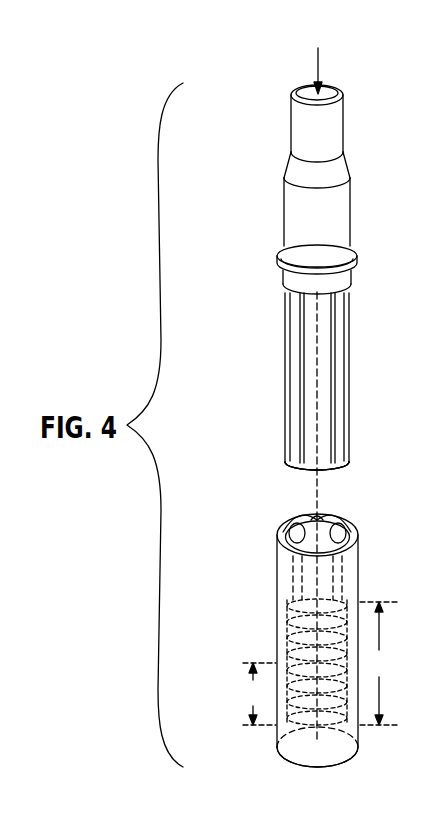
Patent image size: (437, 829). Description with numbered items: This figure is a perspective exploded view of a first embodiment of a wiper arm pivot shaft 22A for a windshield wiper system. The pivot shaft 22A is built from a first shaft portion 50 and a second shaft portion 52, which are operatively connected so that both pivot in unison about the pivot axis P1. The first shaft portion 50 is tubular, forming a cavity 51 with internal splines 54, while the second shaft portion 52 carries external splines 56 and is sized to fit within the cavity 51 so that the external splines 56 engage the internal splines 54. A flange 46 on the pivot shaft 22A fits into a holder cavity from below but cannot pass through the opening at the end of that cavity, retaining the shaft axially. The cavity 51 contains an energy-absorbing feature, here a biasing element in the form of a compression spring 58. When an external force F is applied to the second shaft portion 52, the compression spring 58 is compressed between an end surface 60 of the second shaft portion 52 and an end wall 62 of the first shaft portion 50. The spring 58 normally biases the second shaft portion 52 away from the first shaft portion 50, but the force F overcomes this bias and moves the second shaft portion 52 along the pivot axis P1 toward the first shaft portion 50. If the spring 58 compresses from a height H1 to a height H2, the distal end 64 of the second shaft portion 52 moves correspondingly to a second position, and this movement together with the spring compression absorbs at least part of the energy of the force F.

The pivot shaft 22A is at (266, 261).
The distal end 64 is at (330, 90).
The flange 46 is at (353, 242).
The second shaft portion 52 is at (284, 323).
The external splines 56 is at (296, 370).
The end surface 60 is at (304, 466).
The first shaft portion 50 is at (359, 592).
The compression spring 58 is at (277, 572).
The internal splines 54 is at (285, 523).
The cavity 51 is at (322, 518).
The end wall 62 is at (358, 738).
The external force F is at (321, 53).
The pivot axis P1 is at (317, 521).
The height H1 is at (379, 663).
The height H2 is at (257, 694).